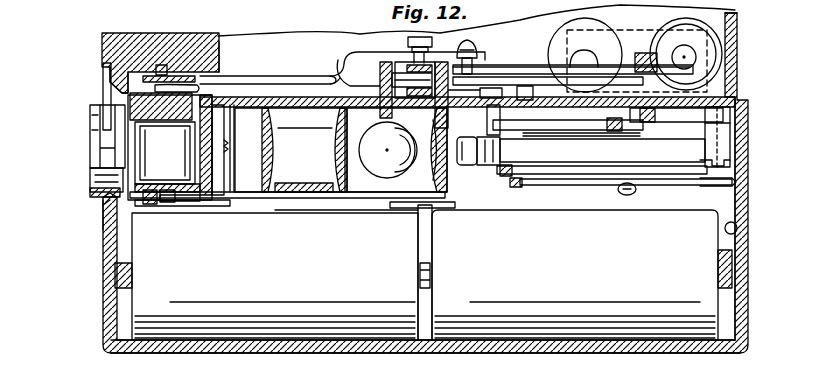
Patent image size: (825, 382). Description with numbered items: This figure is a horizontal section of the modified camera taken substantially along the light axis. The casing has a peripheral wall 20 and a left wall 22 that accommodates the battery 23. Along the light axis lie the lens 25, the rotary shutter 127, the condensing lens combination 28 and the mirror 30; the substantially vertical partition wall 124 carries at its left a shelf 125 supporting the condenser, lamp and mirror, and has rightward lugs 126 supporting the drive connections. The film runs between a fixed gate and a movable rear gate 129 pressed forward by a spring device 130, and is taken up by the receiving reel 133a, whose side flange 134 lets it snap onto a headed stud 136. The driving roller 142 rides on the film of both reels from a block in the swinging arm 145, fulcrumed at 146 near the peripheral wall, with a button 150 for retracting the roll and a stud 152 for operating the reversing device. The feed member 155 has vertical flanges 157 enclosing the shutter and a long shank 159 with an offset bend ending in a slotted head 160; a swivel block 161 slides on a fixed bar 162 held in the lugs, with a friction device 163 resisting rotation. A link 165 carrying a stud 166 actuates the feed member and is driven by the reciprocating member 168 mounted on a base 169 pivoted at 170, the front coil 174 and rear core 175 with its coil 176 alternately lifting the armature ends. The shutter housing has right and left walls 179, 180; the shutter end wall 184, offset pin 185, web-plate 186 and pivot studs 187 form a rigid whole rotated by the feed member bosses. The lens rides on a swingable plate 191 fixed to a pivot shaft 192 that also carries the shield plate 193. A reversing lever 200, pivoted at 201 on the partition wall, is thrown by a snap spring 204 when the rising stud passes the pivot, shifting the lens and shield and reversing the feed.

The peripheral wall 20 is at (103, 240).
The left wall 22 is at (228, 353).
The battery 23 is at (426, 272).
The lens 25 is at (92, 174).
The condensing lens combination 28 is at (291, 150).
The mirror 30 is at (430, 167).
The partition wall 124 is at (358, 107).
The shelf 125 is at (383, 198).
The lugs 126 is at (338, 59).
The shutter 127 is at (165, 153).
The movable rear gate 129 is at (230, 212).
The spring device 130 is at (233, 165).
The receiving reel 133a is at (645, 181).
The side flange 134 is at (713, 183).
The headed stud 136 is at (619, 190).
The driving roller 142 is at (573, 130).
The swinging arm 145 is at (695, 137).
The fulcrum 146 is at (746, 128).
The button 150 is at (462, 160).
The stud 152 is at (500, 140).
The feed member 155 is at (200, 88).
The vertical flanges 157 is at (186, 206).
The shank 159 is at (352, 53).
The slotted head 160 is at (482, 52).
The swivel block 161 is at (390, 69).
The fixed bar 162 is at (422, 108).
The friction device 163 is at (408, 44).
The link 165 is at (660, 33).
The stud 166 is at (610, 76).
The reciprocating member 168 is at (683, 65).
The base 169 is at (686, 54).
The pivot 170 is at (728, 11).
The coil 174 is at (560, 12).
The rear core 175 is at (697, 58).
The coil 176 is at (713, 37).
The right wall 179 is at (218, 34).
The left wall 180 is at (103, 206).
The end wall 184 is at (170, 147).
The offset pin 185 is at (219, 42).
The web-plate 186 is at (160, 64).
The pivot studs 187 is at (170, 208).
The swingable plate 191 is at (101, 95).
The pivot shaft 192 is at (115, 140).
The shield plate 193 is at (215, 136).
The reversing lever 200 is at (291, 76).
The pivot 201 is at (566, 40).
The snap spring 204 is at (465, 96).